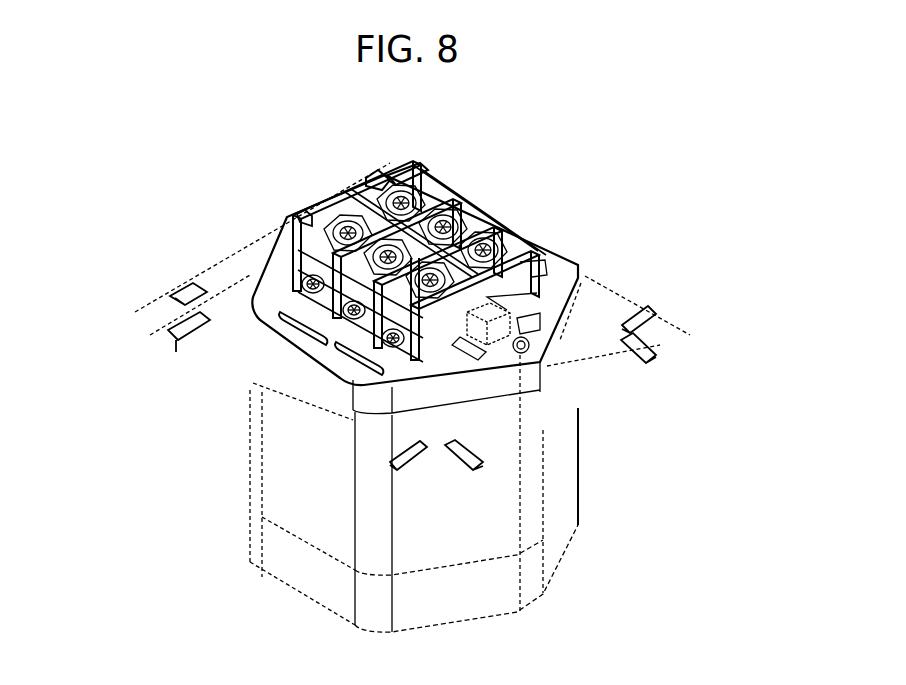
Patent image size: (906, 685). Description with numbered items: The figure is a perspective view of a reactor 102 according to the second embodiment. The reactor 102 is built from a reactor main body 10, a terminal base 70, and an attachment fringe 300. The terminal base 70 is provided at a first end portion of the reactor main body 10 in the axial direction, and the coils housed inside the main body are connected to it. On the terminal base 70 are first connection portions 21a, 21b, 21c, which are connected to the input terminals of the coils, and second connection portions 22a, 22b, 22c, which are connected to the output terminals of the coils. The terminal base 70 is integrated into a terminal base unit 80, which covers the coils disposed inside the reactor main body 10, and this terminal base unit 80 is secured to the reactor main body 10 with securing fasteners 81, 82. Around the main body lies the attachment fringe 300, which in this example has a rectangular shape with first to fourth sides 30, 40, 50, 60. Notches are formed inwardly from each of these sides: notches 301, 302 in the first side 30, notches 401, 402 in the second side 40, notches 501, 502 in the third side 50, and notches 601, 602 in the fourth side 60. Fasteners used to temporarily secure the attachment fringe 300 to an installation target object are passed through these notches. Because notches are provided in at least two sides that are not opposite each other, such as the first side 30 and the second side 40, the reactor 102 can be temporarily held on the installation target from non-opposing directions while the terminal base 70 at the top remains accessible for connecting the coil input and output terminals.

The reactor main body 10 is at (470, 550).
The first connection portion 21a is at (335, 290).
The first connection portion 21b is at (352, 291).
The first connection portion 21c is at (387, 326).
The second connection portion 22a is at (424, 174).
The second connection portion 22b is at (458, 205).
The second connection portion 22c is at (500, 228).
The first side 30 is at (147, 325).
The notch 301 is at (173, 348).
The notch 302 is at (390, 463).
The second side 40 is at (600, 393).
The notch 401 is at (483, 460).
The notch 402 is at (656, 357).
The third side 50 is at (620, 292).
The notch 501 is at (656, 312).
The notch 502 is at (423, 170).
The fourth side 60 is at (280, 226).
The notch 601 is at (366, 180).
The notch 602 is at (173, 288).
The terminal base 70 is at (536, 255).
The terminal base unit 80 is at (582, 267).
The securing fastener 81 is at (534, 355).
The securing fastener 82 is at (298, 216).
The reactor 102 is at (630, 140).
The attachment fringe 300 is at (611, 372).